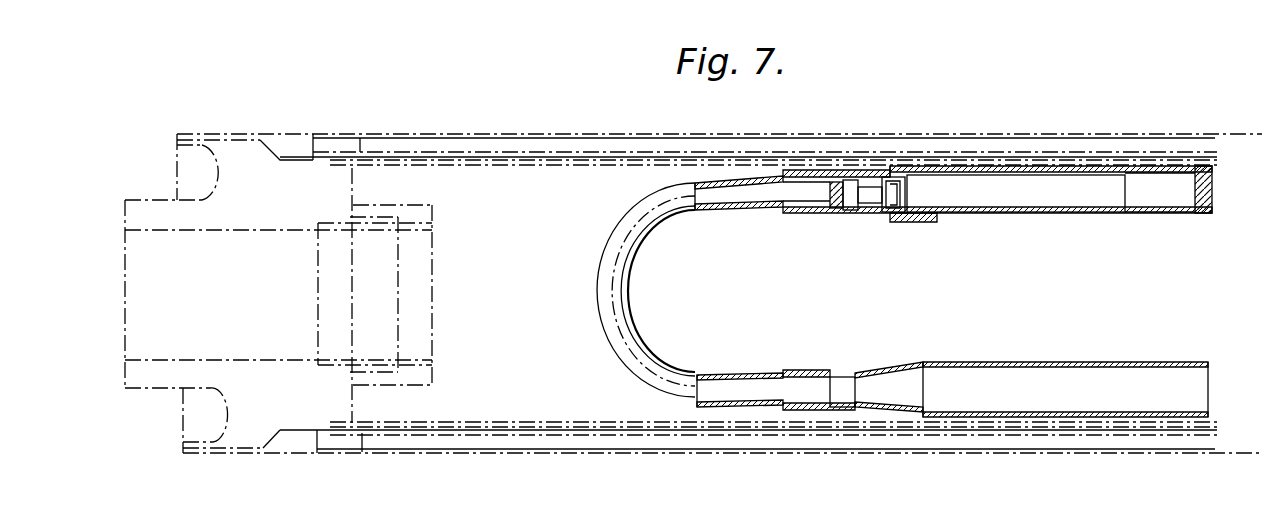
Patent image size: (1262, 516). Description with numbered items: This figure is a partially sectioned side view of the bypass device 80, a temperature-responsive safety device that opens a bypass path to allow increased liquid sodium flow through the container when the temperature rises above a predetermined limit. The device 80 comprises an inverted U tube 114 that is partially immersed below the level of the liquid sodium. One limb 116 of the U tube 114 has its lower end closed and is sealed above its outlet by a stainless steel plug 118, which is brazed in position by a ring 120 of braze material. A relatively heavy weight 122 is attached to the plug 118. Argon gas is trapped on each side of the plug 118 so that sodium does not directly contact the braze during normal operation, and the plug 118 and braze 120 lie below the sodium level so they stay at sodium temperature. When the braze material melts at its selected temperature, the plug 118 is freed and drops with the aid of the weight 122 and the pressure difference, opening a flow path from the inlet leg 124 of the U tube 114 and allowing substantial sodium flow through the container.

The bypass device 80 is at (708, 174).
The inverted U tube 114 is at (590, 283).
The limb 116 is at (1135, 220).
The stainless steel plug 118 is at (835, 182).
The ring of braze material 120 is at (848, 180).
The weight 122 is at (1063, 185).
The inlet leg 124 is at (1087, 361).